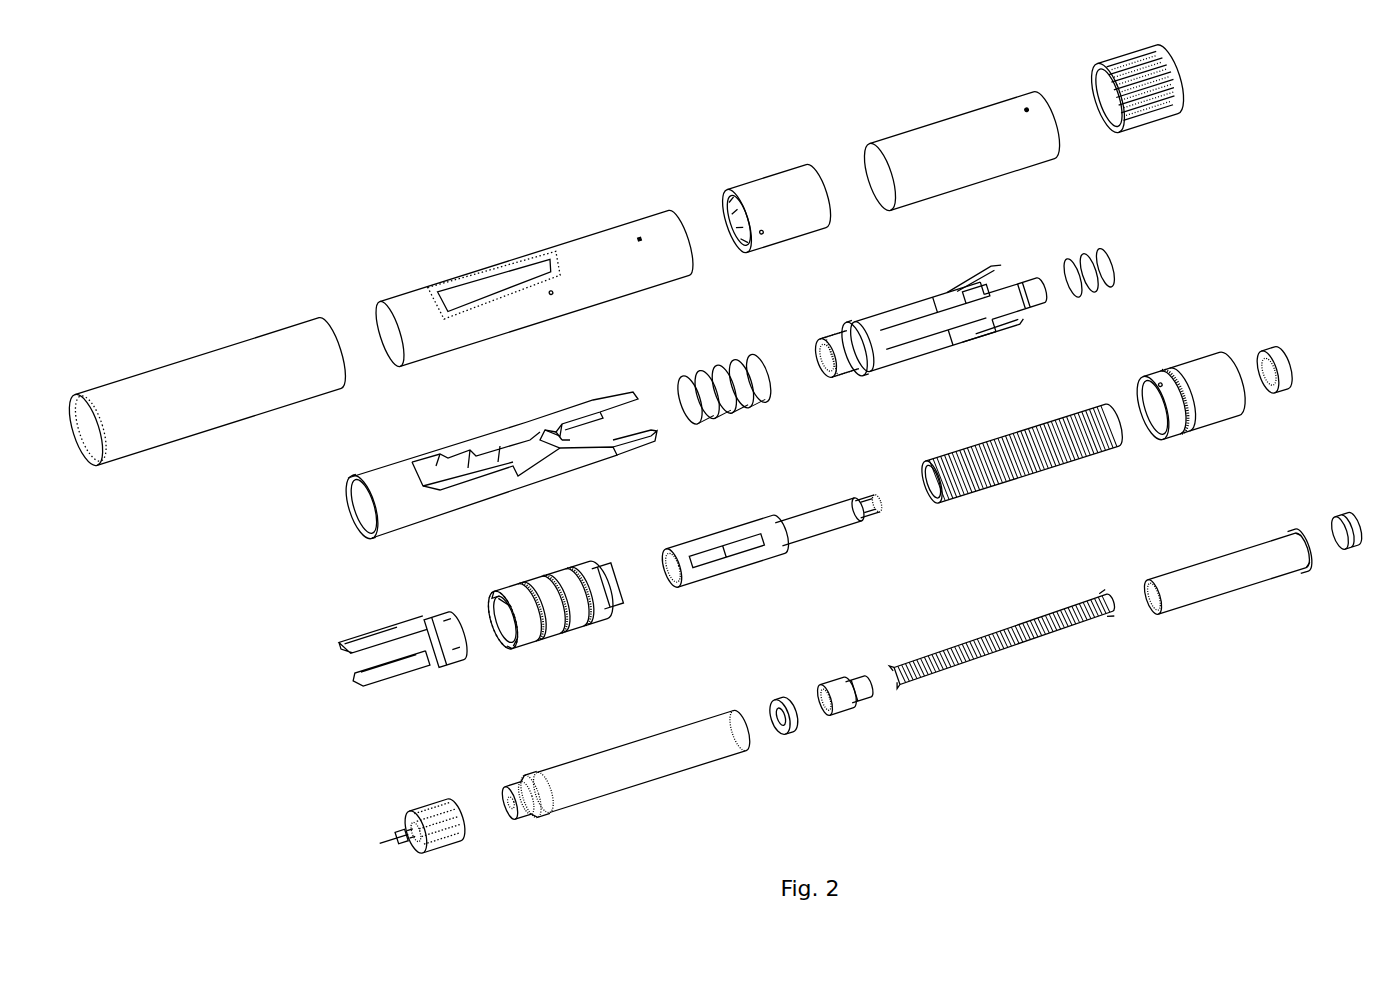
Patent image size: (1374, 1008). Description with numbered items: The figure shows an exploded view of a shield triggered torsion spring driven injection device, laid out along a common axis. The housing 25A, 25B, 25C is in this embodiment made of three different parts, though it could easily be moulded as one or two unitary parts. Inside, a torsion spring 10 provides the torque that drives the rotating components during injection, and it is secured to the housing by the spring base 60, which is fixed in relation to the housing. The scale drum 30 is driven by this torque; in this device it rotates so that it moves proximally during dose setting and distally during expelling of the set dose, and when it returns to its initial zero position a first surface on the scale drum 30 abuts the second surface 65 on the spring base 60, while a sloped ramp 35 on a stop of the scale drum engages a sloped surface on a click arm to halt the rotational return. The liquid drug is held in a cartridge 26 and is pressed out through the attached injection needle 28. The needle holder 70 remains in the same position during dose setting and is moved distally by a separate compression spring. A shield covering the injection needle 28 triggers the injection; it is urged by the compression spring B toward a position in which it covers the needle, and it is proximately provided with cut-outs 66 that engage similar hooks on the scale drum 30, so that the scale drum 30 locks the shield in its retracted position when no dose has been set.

The housing part A 25A is at (598, 258).
The housing part B 25B is at (777, 197).
The housing part C 25C is at (893, 143).
The compression spring B is at (735, 362).
The needle holder 70 is at (888, 357).
The spring base 60 is at (1208, 410).
The torsion spring 10 is at (1023, 468).
The second surface 65 is at (402, 510).
The cut-outs 66 is at (653, 443).
The sloped ramp 35 is at (507, 647).
The scale drum 30 is at (585, 612).
The cartridge 26 is at (645, 770).
The injection needle 28 is at (447, 848).